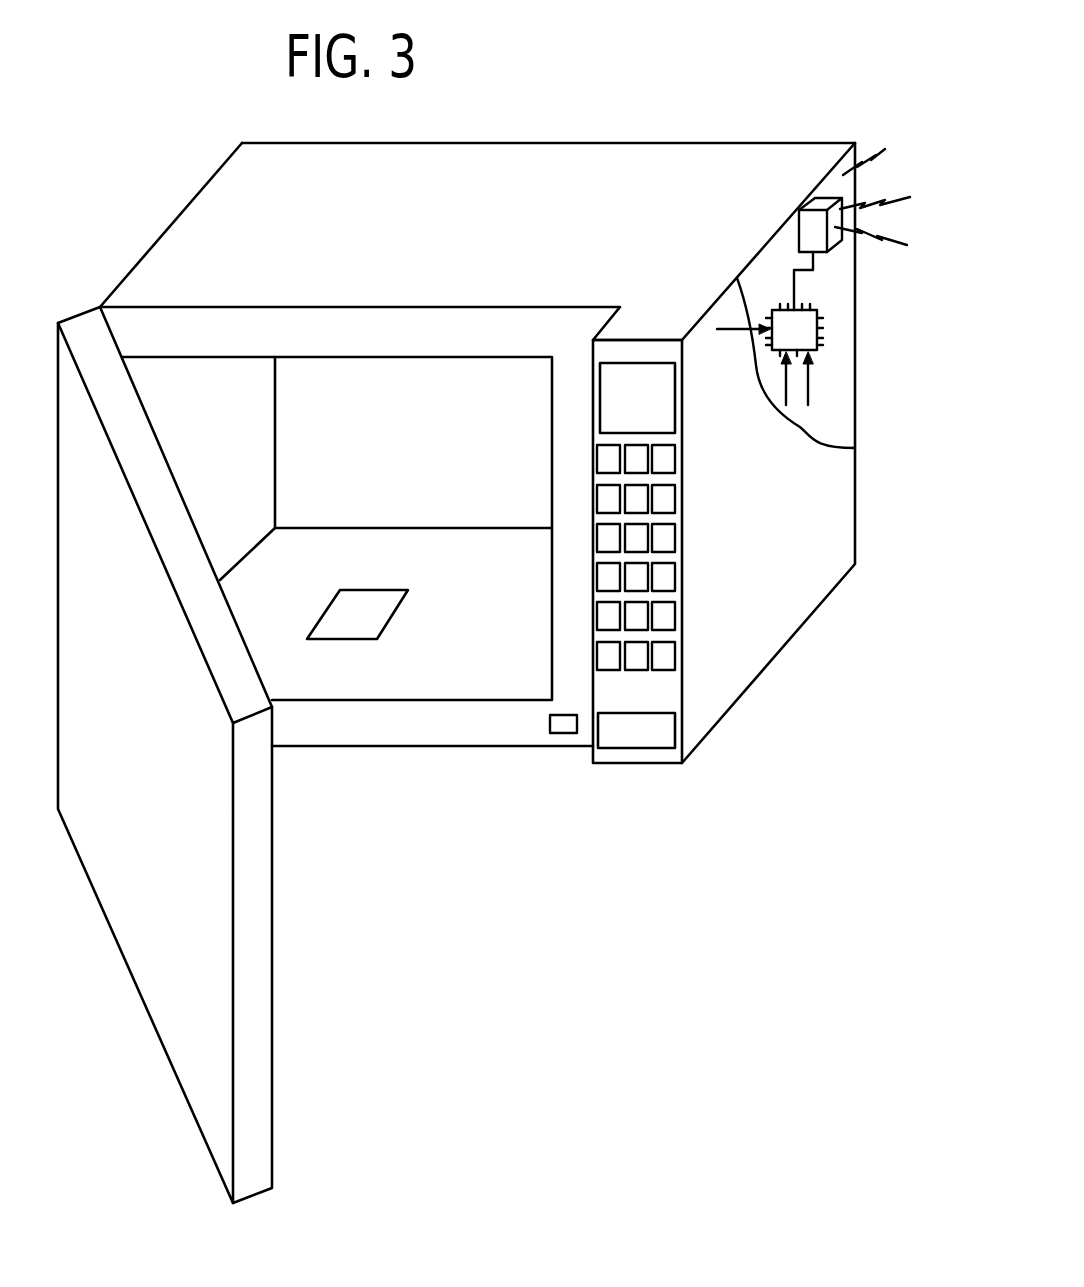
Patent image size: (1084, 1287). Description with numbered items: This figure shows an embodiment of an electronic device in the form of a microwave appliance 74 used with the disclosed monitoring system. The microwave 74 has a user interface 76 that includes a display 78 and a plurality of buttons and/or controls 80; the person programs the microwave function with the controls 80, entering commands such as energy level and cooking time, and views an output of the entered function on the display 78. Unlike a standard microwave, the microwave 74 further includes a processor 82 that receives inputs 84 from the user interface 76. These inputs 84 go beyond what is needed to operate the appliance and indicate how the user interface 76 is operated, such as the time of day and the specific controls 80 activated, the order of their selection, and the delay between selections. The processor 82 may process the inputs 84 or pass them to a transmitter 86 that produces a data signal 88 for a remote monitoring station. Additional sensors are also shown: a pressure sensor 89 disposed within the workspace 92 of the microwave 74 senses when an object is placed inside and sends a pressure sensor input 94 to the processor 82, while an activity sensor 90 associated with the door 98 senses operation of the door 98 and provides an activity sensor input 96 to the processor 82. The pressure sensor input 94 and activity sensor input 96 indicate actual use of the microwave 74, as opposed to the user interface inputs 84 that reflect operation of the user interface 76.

The microwave appliance 74 is at (688, 152).
The user interface 76 is at (677, 352).
The display 78 is at (600, 437).
The buttons and/or controls 80 is at (600, 683).
The processor 82 is at (820, 343).
The inputs from the user interface 84 is at (733, 328).
The transmitter 86 is at (810, 230).
The data signal 88 is at (884, 149).
The pressure sensor 89 is at (380, 607).
The activity sensor 90 is at (564, 733).
The workspace 92 is at (352, 388).
The pressure sensor input 94 is at (787, 378).
The activity sensor input 96 is at (808, 380).
The door 98 is at (267, 1065).